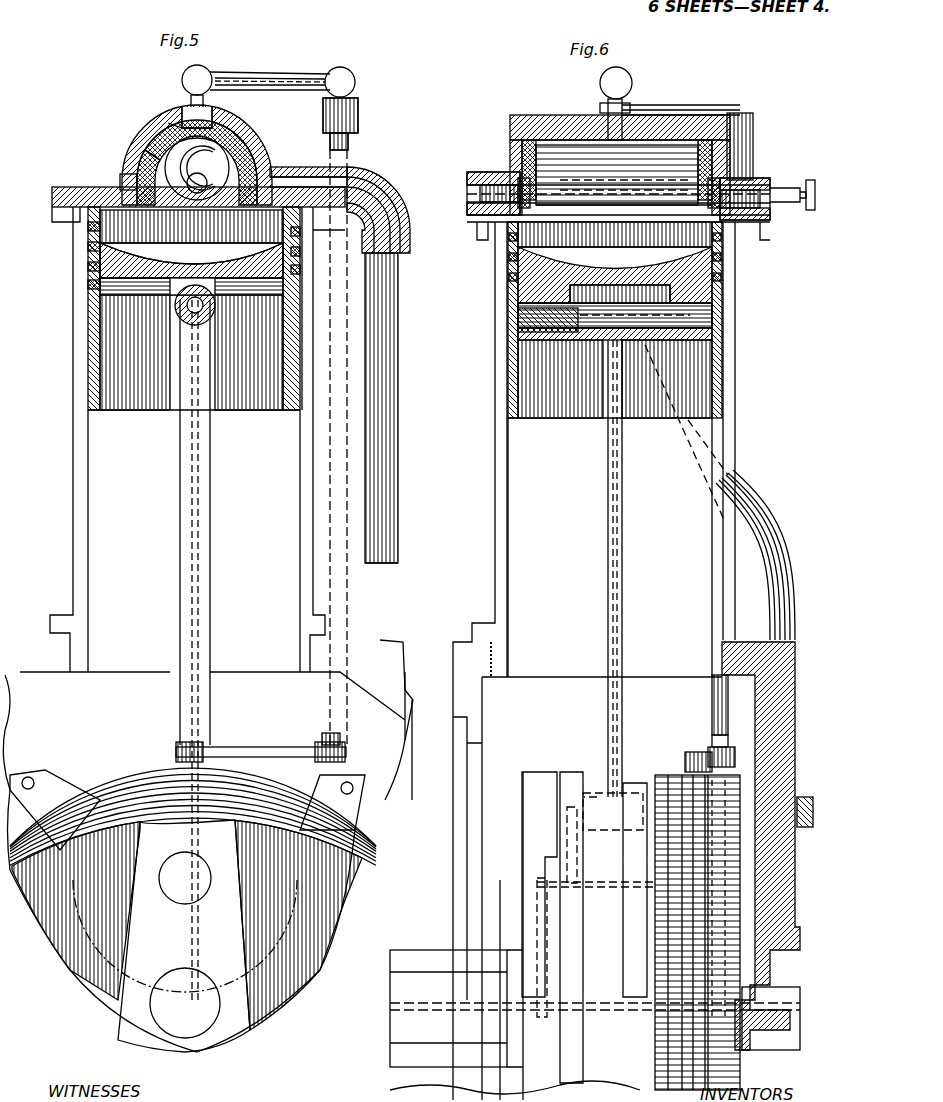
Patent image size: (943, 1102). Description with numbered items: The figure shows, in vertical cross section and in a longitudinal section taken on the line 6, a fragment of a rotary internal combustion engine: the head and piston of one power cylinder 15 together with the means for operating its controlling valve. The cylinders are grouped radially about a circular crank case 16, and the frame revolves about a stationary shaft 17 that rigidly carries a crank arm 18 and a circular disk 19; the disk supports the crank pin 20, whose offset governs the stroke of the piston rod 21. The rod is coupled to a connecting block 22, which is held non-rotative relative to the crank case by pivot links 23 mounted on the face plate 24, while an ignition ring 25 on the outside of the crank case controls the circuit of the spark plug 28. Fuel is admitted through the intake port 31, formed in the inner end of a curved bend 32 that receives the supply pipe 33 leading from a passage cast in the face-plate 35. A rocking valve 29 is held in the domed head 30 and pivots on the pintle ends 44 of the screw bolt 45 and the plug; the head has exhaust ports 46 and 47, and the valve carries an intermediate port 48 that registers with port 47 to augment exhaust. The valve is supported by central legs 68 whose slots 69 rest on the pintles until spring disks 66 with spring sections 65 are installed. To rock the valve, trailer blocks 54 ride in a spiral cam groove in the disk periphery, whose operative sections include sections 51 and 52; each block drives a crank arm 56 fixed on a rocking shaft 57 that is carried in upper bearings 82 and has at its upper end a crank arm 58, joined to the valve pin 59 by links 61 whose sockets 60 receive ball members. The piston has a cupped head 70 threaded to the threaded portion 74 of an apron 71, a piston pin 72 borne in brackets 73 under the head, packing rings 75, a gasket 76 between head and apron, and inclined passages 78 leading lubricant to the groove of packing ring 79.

In FIG. 5, the section line 6— 6 is at (8, 1037).
In FIG. 5, the power cylinder 15 is at (73, 531).
In FIG. 5, the crank case 16 is at (445, 880).
In FIG. 6, the crank case 16 is at (480, 860).
In FIG. 5, the stationary shaft 17 is at (190, 1033).
In FIG. 6, the stationary shaft 17 is at (395, 1030).
In FIG. 6, the crank arm 18 is at (537, 890).
In FIG. 5, the circular disk 19 is at (104, 783).
In FIG. 6, the circular disk 19 is at (728, 1000).
In FIG. 5, the crank pin 20 is at (197, 895).
In FIG. 5, the piston rod 21 is at (205, 362).
In FIG. 6, the piston rod 21 is at (622, 597).
In FIG. 6, the connecting block 22 is at (557, 835).
In FIG. 5, the pivot link 23 is at (395, 830).
In FIG. 6, the pivot link 23 is at (520, 1095).
In FIG. 5, the face plate 24 is at (395, 785).
In FIG. 6, the ignition ring 25 is at (805, 827).
In FIG. 6, the spark plug / plug 28 is at (786, 195).
In FIG. 5, the rocking valve 29 is at (150, 158).
In FIG. 6, the rocking valve 29 is at (575, 140).
In FIG. 5, the domed head 30 is at (148, 148).
In FIG. 6, the domed head 30 is at (535, 110).
In FIG. 5, the intake port 31 is at (285, 172).
In FIG. 5, the bend 32 is at (392, 194).
In FIG. 5, the supply pipe 33 is at (392, 349).
In FIG. 6, the supply pipe 33 is at (748, 530).
In FIG. 6, the face-plate 35 is at (810, 720).
In FIG. 5, the pintle end 44 is at (199, 193).
In FIG. 6, the pintle end 44 is at (520, 178).
In FIG. 6, the screw bolt 45 is at (480, 193).
In FIG. 5, the exhaust port 46 is at (120, 180).
In FIG. 5, the exhaust port 47 is at (188, 118).
In FIG. 5, the intermediate port 48 is at (176, 136).
In FIG. 6, the spiral groove section 51 is at (665, 995).
In FIG. 6, the spiral groove section 52 is at (712, 1000).
In FIG. 5, the trailer block 54 is at (176, 760).
In FIG. 6, the trailer block 54 is at (685, 768).
In FIG. 5, the crank arm 56 is at (250, 760).
In FIG. 5, the rocking shaft 57 is at (358, 128).
In FIG. 6, the rocking shaft 57 is at (712, 697).
In FIG. 5, the crank arm 58 is at (268, 90).
In FIG. 6, the crank arm 58 is at (694, 120).
In FIG. 5, the pin 59 is at (205, 100).
In FIG. 6, the pin 59 is at (610, 103).
In FIG. 5, the socket 60 is at (190, 80).
In FIG. 6, the socket 60 is at (625, 78).
In FIG. 5, the link 61 is at (225, 178).
In FIG. 5, the spring section 65 is at (197, 168).
In FIG. 6, the spring section 65 is at (745, 110).
In FIG. 5, the spring disk 66 is at (192, 196).
In FIG. 5, the central leg 68 is at (182, 126).
In FIG. 6, the slot 69 is at (510, 215).
In FIG. 5, the piston head 70 is at (240, 275).
In FIG. 6, the piston head 70 is at (615, 255).
In FIG. 5, the apron 71 is at (228, 411).
In FIG. 5, the piston pin 72 is at (200, 318).
In FIG. 6, the piston pin 72 is at (655, 318).
In FIG. 6, the bracket 73 is at (560, 340).
In FIG. 5, the threaded portion 74 is at (95, 290).
In FIG. 5, the packing ring 75 is at (88, 246).
In FIG. 5, the gasket 76 is at (88, 252).
In FIG. 5, the inclined passage 78 is at (90, 272).
In FIG. 6, the inclined passage 78 is at (512, 280).
In FIG. 5, the packing ring 79 is at (300, 265).
In FIG. 5, the upper bearing 82 is at (352, 155).
In FIG. 6, the upper bearing 82 is at (753, 150).